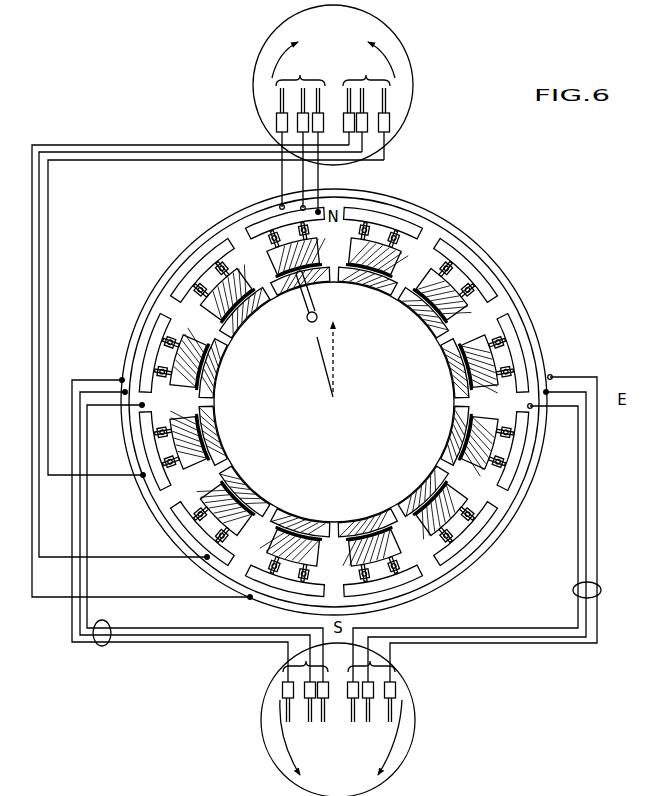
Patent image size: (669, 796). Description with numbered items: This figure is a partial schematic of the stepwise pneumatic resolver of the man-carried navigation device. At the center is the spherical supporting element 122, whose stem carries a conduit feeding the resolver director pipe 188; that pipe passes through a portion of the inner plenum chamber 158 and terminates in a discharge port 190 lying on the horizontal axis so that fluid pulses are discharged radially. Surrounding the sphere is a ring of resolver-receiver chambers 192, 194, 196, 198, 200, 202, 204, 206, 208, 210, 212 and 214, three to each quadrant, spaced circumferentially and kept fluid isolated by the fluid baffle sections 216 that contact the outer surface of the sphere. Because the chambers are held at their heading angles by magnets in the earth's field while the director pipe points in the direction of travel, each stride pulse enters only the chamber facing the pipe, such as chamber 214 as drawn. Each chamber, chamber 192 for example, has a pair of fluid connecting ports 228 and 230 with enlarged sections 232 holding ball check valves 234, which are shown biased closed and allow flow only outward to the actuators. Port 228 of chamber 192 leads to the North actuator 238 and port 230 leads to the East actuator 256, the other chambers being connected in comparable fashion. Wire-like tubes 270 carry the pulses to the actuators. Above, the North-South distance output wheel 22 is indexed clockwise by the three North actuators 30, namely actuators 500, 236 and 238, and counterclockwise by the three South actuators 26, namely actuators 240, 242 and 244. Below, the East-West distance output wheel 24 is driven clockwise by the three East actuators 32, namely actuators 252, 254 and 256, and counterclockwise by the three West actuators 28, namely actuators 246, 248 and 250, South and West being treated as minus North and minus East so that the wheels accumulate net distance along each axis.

The North-South distance output wheel 22 is at (331, 109).
The East-West distance output wheel 24 is at (339, 719).
The South actuators 26 is at (402, 110).
The West actuators 28 is at (272, 704).
The North actuators 30 is at (262, 137).
The East actuators 32 is at (405, 714).
The spherical supporting element 122 is at (453, 440).
The inner plenum chamber 158 is at (346, 436).
The resolver director pipe 188 is at (289, 320).
The discharge port 190 is at (303, 305).
The resolver-receiver chamber 192 is at (452, 270).
The resolver-receiver chamber 194 is at (440, 328).
The resolver-receiver chamber 196 is at (452, 385).
The resolver-receiver chamber 198 is at (448, 462).
The resolver-receiver chamber 200 is at (406, 517).
The resolver-receiver chamber 202 is at (362, 525).
The resolver-receiver chamber 204 is at (321, 523).
The resolver-receiver chamber 206 is at (268, 506).
The resolver-receiver chamber 208 is at (224, 462).
The resolver-receiver chamber 210 is at (218, 382).
The resolver-receiver chamber 212 is at (190, 315).
The resolver-receiver chamber 214 is at (262, 242).
The fluid baffle sections 216 is at (348, 288).
The fluid connecting port 228 is at (410, 216).
The fluid connecting port 230 is at (460, 271).
The enlarged sections 232 is at (355, 228).
The ball check valves 234 is at (457, 291).
The North actuator 236 is at (302, 106).
The North actuator 238 is at (277, 122).
The South actuator 240 is at (350, 102).
The South actuator 242 is at (364, 114).
The South actuator 244 is at (390, 122).
The West actuator 246 is at (286, 710).
The West actuator 248 is at (309, 722).
The West actuator 250 is at (322, 722).
The East actuator 252 is at (355, 722).
The East actuator 254 is at (370, 722).
The East actuator 256 is at (392, 708).
The tubes 270 is at (600, 586).
The North actuator 500 is at (280, 100).